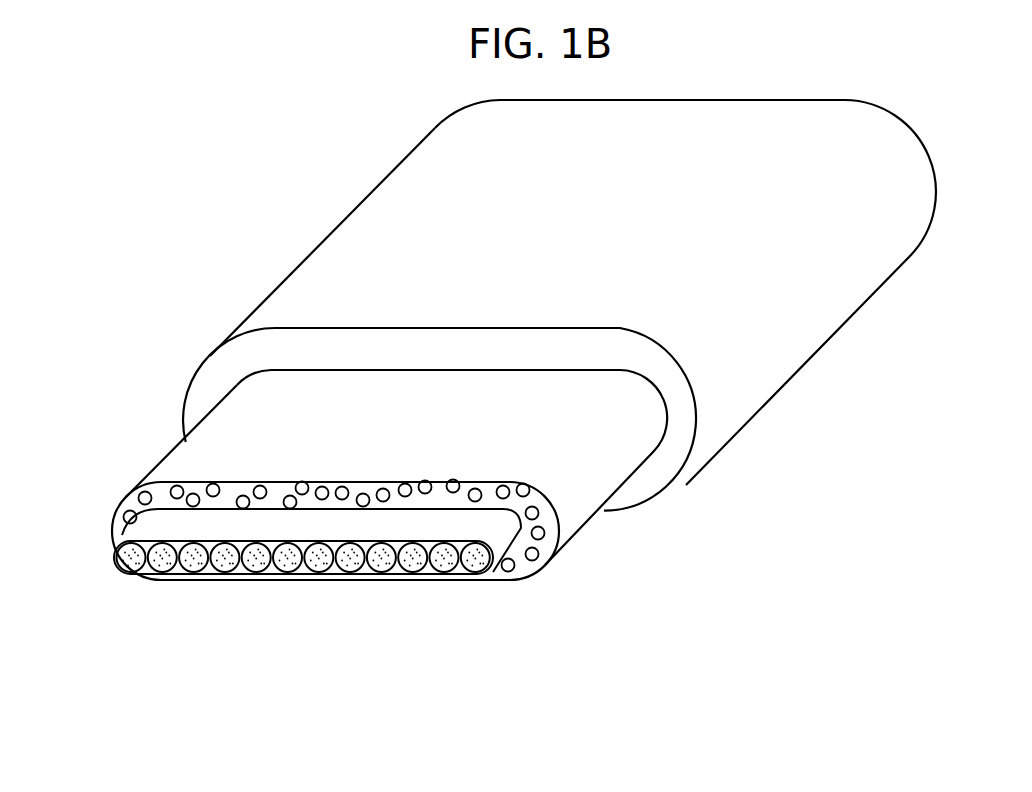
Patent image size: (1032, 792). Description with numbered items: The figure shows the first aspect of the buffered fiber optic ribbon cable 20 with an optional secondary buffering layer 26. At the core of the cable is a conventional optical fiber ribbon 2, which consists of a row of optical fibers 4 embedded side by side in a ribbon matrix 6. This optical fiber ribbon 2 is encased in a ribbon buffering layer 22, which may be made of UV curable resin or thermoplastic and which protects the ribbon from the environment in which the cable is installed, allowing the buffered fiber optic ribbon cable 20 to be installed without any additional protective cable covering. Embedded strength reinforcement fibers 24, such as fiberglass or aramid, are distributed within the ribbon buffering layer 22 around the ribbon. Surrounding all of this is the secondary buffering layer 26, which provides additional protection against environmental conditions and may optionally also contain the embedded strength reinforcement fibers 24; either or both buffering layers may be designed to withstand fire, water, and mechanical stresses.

The optical fiber ribbon 2 is at (348, 560).
The optical fibers 4 is at (163, 558).
The ribbon matrix 6 is at (158, 528).
The buffered fiber optic ribbon cable 20 is at (150, 406).
The ribbon buffering layer 22 is at (580, 502).
The embedded strength reinforcement fibers 24 is at (538, 533).
The secondary buffering layer 26 is at (350, 237).